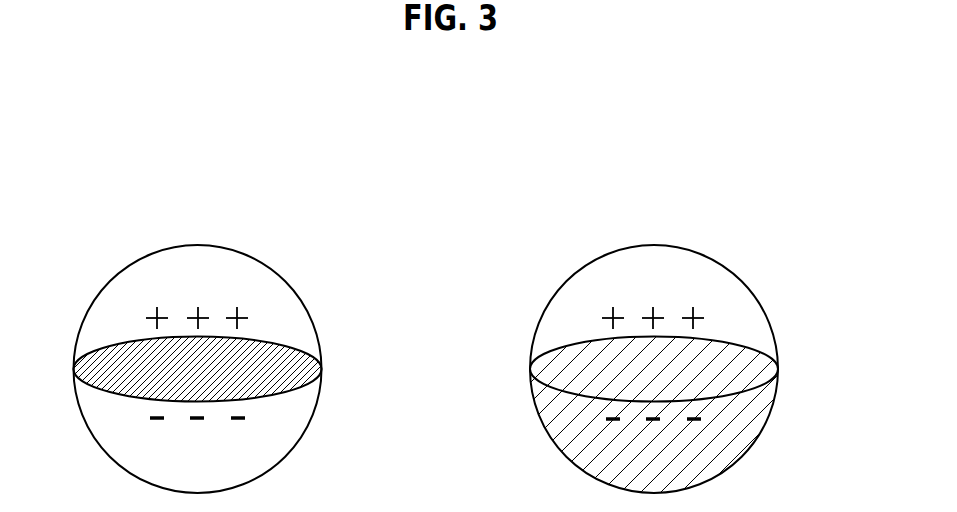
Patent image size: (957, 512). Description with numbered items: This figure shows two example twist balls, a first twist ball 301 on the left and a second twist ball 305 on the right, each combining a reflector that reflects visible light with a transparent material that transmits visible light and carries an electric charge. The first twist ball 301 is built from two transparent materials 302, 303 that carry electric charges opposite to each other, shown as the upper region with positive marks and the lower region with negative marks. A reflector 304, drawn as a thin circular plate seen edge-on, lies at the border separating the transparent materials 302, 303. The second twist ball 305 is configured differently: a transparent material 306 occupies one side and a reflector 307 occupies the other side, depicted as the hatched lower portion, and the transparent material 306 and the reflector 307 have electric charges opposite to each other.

The first twist ball 301 is at (157, 252).
The transparent material 302 is at (295, 318).
The transparent material 303 is at (295, 422).
The reflector 304 is at (303, 363).
The second twist ball 305 is at (614, 252).
The transparent material 306 is at (752, 318).
The reflector 307 is at (752, 423).